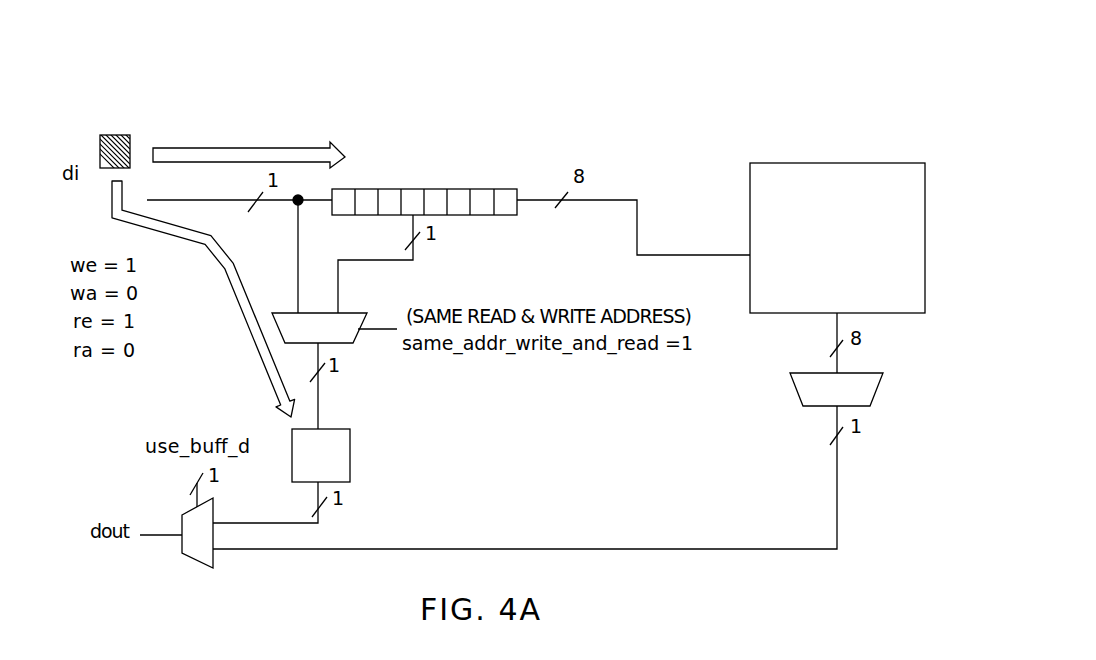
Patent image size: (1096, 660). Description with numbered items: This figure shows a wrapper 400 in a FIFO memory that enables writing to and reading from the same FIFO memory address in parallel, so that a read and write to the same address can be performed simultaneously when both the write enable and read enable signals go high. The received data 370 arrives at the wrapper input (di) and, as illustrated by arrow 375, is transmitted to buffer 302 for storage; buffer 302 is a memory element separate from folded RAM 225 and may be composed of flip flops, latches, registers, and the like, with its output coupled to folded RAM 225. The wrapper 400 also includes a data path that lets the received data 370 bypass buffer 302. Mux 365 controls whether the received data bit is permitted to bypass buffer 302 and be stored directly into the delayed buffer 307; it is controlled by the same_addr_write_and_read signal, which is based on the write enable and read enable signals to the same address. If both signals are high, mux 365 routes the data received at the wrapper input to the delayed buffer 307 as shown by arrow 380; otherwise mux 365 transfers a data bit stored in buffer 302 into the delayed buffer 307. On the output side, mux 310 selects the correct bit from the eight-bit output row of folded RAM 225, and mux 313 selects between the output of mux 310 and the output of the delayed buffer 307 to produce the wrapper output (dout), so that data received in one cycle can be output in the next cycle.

The wrapper 400 is at (603, 84).
The received data 370 is at (113, 131).
The arrow 375 is at (287, 147).
The buffer 302 is at (424, 183).
The folded RAM 225 is at (858, 285).
The mux 310 is at (793, 390).
The mux 365 is at (350, 343).
The arrow 380 is at (242, 342).
The delayed buffer 307 is at (377, 455).
The mux 313 is at (193, 567).